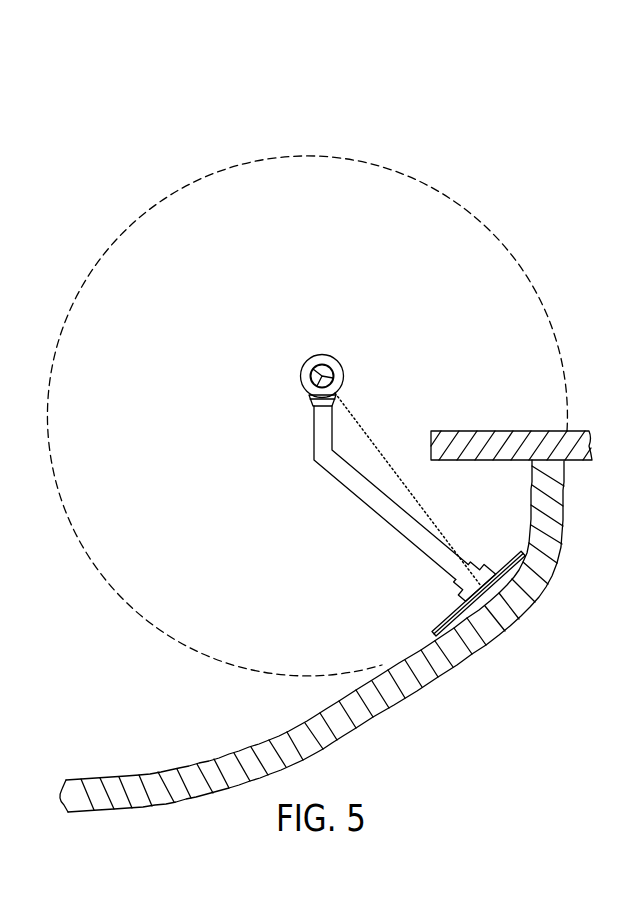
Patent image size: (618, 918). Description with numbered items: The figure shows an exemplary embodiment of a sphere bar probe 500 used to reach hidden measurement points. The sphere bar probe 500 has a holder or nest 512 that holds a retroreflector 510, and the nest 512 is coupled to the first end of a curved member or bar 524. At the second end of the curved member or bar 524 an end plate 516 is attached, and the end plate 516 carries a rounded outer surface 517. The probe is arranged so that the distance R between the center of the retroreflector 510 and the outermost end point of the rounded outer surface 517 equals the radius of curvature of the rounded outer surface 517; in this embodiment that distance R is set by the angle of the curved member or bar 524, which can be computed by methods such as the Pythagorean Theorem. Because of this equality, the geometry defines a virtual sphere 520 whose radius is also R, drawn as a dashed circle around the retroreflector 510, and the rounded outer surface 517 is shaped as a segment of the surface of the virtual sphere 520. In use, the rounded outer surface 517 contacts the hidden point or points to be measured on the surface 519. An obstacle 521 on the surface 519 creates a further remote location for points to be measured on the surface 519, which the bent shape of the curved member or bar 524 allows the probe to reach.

The sphere bar probe 500 is at (153, 181).
The retroreflector 510 is at (325, 359).
The nest 512 is at (320, 407).
The end plate 516 is at (444, 626).
The rounded outer surface 517 is at (502, 581).
The surface 519 is at (262, 758).
The virtual sphere 520 is at (278, 152).
The obstacle 521 is at (498, 443).
The curved member or bar 524 is at (343, 474).